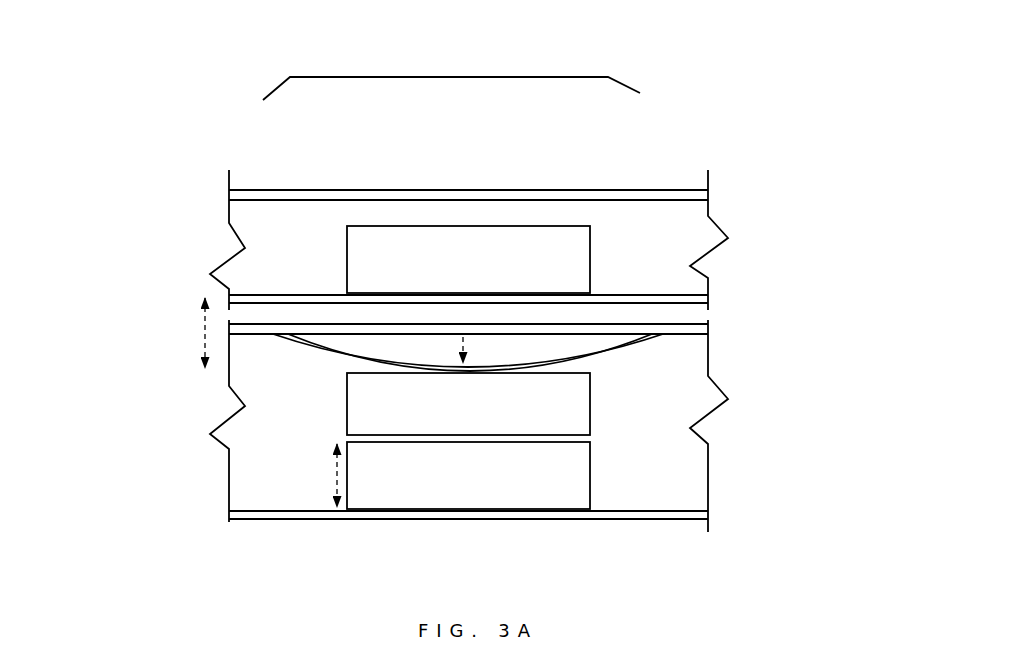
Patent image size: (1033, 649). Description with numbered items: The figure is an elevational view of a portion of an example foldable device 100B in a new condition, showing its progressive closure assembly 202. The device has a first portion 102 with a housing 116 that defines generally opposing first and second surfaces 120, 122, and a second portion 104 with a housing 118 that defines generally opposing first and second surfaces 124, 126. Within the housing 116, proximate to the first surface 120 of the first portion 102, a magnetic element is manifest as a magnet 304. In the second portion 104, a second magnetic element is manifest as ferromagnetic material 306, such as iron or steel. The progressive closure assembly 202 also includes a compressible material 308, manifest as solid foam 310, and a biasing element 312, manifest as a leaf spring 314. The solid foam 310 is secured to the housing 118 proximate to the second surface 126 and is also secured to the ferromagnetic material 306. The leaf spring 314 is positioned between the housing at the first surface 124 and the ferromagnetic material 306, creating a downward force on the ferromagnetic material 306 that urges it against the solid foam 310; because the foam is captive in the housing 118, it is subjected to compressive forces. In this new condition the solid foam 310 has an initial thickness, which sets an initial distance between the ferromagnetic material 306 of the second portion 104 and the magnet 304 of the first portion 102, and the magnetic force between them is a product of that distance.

The device 100B is at (203, 44).
The progressive closure assembly 202 is at (425, 77).
The first portion 102 is at (300, 187).
The second portion 104 is at (317, 522).
The housing 116 is at (228, 192).
The housing 118 is at (683, 519).
The first surface 120 is at (700, 304).
The second surface 122 is at (684, 190).
The first surface 124 is at (479, 323).
The second surface 126 is at (240, 519).
The magnet 304 is at (526, 272).
The ferromagnetic material 306 is at (534, 428).
The compressible material 308 is at (638, 535).
The solid foam 310 is at (547, 490).
The biasing element 312 is at (652, 352).
The leaf spring 314 is at (593, 358).